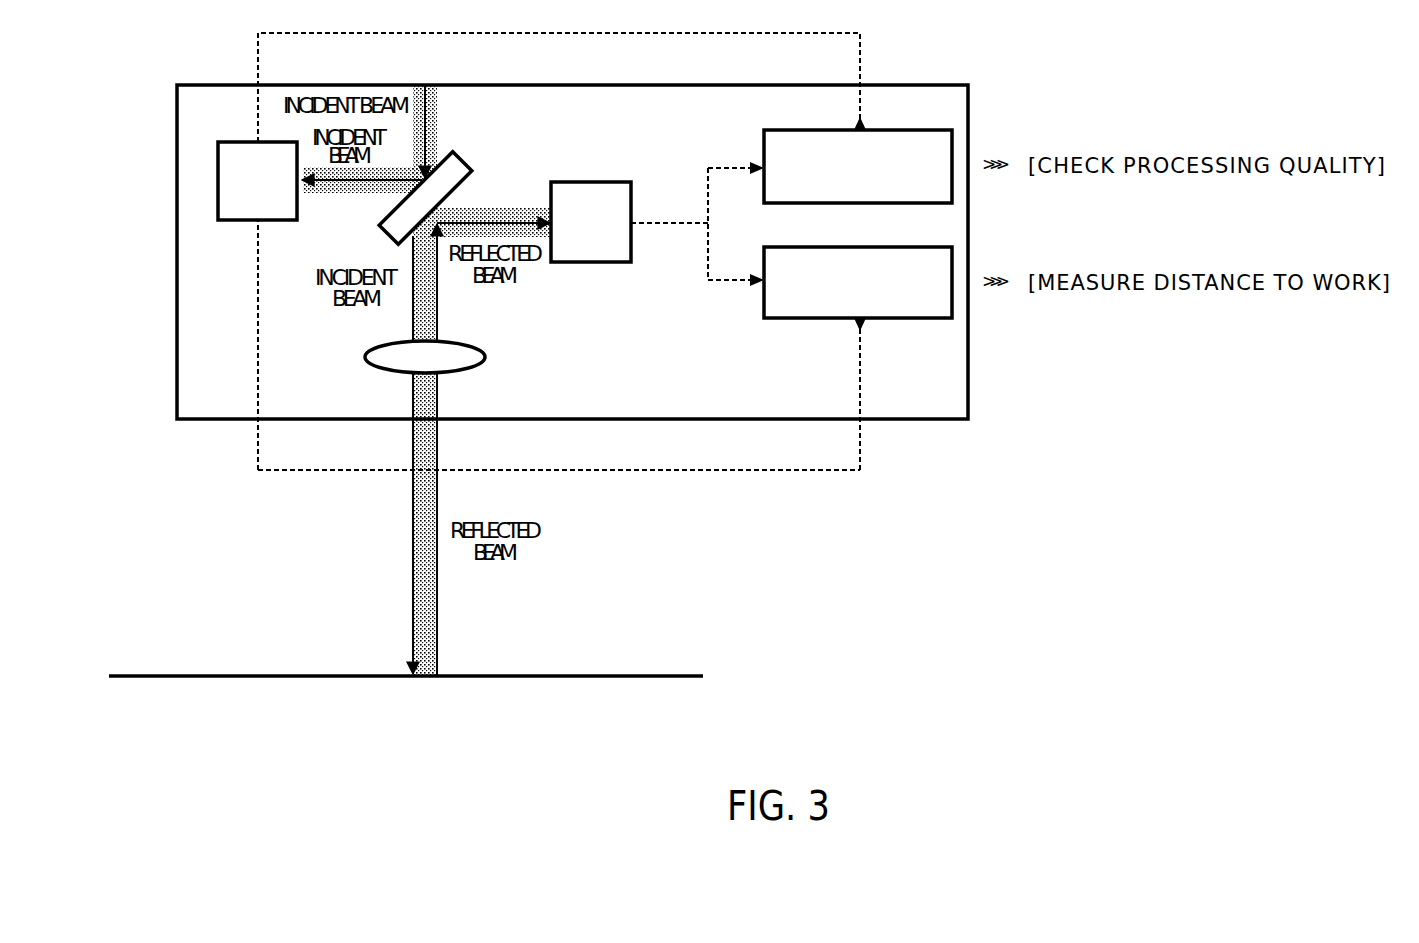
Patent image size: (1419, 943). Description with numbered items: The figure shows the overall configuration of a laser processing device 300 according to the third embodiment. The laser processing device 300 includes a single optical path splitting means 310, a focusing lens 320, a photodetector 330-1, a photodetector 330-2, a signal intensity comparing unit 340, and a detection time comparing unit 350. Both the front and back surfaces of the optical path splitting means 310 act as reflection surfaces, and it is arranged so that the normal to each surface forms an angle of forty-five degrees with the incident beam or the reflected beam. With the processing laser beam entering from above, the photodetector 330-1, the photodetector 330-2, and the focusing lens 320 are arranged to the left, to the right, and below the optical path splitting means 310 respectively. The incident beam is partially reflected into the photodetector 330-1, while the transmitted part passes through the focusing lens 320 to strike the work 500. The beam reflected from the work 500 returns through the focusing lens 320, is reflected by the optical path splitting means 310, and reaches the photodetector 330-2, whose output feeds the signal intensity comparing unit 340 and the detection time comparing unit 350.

The laser processing device 300 is at (602, 229).
The optical path splitting means 310 is at (453, 183).
The focusing lens 320 is at (441, 331).
The photodetector 330-1 is at (242, 212).
The photodetector 330-2 is at (599, 250).
The signal intensity comparing unit 340 is at (819, 155).
The detection time comparing unit 350 is at (842, 313).
The work 500 is at (414, 670).